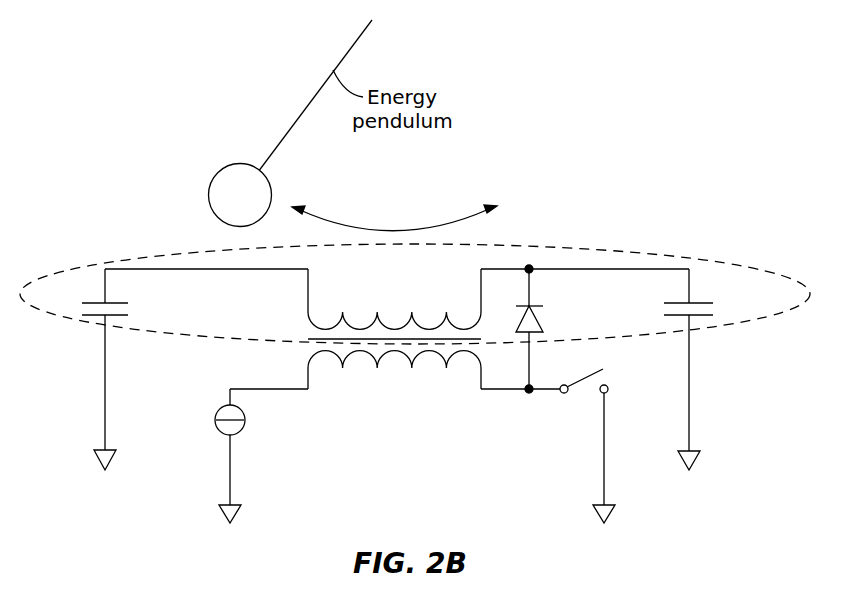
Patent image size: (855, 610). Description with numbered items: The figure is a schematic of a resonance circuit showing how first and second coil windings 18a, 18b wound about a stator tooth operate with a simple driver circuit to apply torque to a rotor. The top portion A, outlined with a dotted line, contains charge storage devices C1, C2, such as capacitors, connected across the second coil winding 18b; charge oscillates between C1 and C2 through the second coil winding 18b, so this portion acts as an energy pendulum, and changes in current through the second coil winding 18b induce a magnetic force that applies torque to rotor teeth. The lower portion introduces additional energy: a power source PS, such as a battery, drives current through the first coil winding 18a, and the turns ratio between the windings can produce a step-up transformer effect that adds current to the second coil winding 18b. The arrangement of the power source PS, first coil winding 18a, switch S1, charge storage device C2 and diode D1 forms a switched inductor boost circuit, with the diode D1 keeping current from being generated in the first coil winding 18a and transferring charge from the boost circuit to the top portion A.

The top portion A is at (163, 253).
The first coil winding 18a is at (412, 368).
The second coil winding 18b is at (412, 312).
The charge storage device C1 is at (122, 369).
The charge storage device C2 is at (670, 369).
The diode D1 is at (544, 329).
The switch S1 is at (587, 446).
The power source PS is at (214, 456).